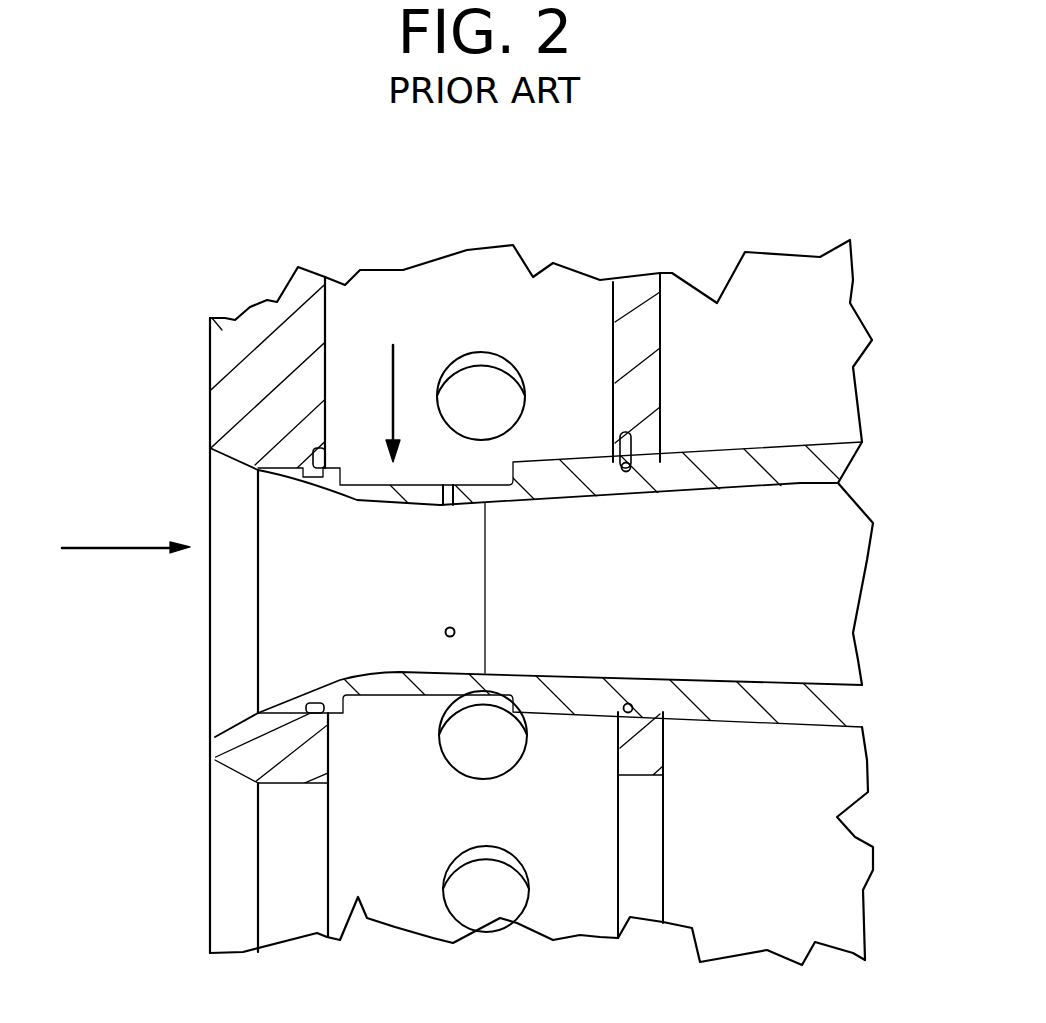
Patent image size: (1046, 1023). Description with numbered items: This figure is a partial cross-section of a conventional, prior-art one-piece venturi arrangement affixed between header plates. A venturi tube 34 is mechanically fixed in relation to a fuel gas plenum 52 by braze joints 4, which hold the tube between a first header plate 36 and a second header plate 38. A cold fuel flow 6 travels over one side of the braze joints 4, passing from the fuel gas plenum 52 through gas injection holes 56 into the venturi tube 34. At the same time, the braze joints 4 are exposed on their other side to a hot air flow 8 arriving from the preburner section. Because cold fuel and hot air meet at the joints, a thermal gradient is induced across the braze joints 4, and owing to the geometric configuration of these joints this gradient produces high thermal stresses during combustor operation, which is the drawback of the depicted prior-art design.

The first header plate 36 is at (248, 340).
The second header plate 38 is at (640, 320).
The braze joints 4 is at (327, 452).
The cold fuel flow 6 is at (385, 403).
The hot air flow 8 is at (126, 530).
The gas injection holes 56 is at (448, 505).
The venturi tube 34 is at (780, 565).
The fuel gas plenum 52 is at (418, 823).